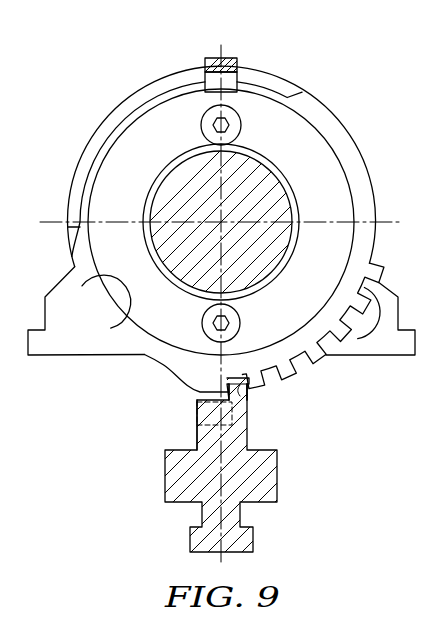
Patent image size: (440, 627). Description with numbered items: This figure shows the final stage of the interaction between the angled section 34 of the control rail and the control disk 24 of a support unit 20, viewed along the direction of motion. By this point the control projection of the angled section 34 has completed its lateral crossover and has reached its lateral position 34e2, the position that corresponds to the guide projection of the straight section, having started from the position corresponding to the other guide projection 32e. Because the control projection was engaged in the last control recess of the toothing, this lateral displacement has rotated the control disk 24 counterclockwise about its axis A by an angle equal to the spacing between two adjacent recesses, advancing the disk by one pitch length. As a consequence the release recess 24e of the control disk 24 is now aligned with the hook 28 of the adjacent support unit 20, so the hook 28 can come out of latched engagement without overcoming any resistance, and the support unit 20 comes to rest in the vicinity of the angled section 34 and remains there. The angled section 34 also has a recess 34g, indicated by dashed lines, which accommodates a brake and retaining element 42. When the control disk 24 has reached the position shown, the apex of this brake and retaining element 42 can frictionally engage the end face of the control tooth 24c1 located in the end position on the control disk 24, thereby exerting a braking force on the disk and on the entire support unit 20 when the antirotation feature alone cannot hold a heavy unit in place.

The support unit 20 is at (144, 67).
The control disk 24 is at (355, 168).
The control tooth 24c1 is at (207, 373).
The release recess 24e is at (238, 83).
The hook 28 is at (207, 57).
The axis A is at (228, 217).
The angled section 34 is at (277, 490).
The recess 34g is at (193, 434).
The brake and retaining element 42 is at (195, 403).
The lateral position 34e2 is at (250, 398).
The guide projection 32e is at (282, 411).